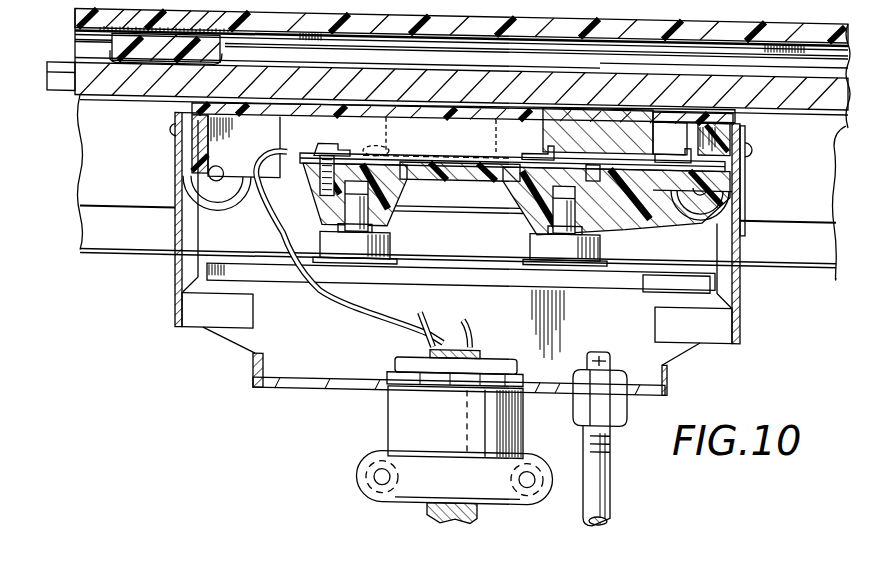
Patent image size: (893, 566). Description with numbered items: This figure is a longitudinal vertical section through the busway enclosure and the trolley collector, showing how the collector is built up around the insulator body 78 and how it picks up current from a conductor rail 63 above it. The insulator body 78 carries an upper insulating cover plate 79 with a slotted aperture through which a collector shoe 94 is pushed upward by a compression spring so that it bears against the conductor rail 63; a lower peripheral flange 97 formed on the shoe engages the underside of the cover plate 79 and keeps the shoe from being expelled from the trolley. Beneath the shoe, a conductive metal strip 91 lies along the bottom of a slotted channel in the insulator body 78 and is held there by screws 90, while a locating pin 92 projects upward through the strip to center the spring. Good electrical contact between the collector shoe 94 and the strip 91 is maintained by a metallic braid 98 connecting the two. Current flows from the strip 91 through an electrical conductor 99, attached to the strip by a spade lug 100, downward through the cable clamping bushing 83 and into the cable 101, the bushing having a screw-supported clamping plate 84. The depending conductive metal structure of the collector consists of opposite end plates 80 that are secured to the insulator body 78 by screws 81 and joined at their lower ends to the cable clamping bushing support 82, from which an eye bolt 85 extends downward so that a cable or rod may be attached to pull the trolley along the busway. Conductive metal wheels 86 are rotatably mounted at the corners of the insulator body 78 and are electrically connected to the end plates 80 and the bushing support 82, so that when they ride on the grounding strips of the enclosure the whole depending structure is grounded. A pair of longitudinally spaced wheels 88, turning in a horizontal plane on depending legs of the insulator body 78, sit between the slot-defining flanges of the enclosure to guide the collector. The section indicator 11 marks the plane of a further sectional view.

The section line 11- 11 is at (167, 119).
The conductor rail 63 is at (812, 100).
The insulator body 78 is at (493, 178).
The insulating cover plate 79 is at (718, 115).
The end plate 80 is at (177, 283).
The screw 81 is at (748, 144).
The cable clamping bushing support 82 is at (272, 384).
The cable clamping bushing 83 is at (400, 414).
The clamping plate 84 is at (420, 468).
The eye bolt 85 is at (613, 481).
The conductive metal wheel 86 is at (220, 212).
The wheel 88 is at (385, 245).
The screw 90 is at (326, 152).
The conductive metal strip 91 is at (418, 159).
The locating pin 92 is at (592, 170).
The collector shoe 94 is at (643, 126).
The lower peripheral flange 97 is at (533, 151).
The metallic braid 98 is at (680, 150).
The electrical conductor 99 is at (455, 330).
The spade lug 100 is at (287, 155).
The cable 101 is at (478, 515).